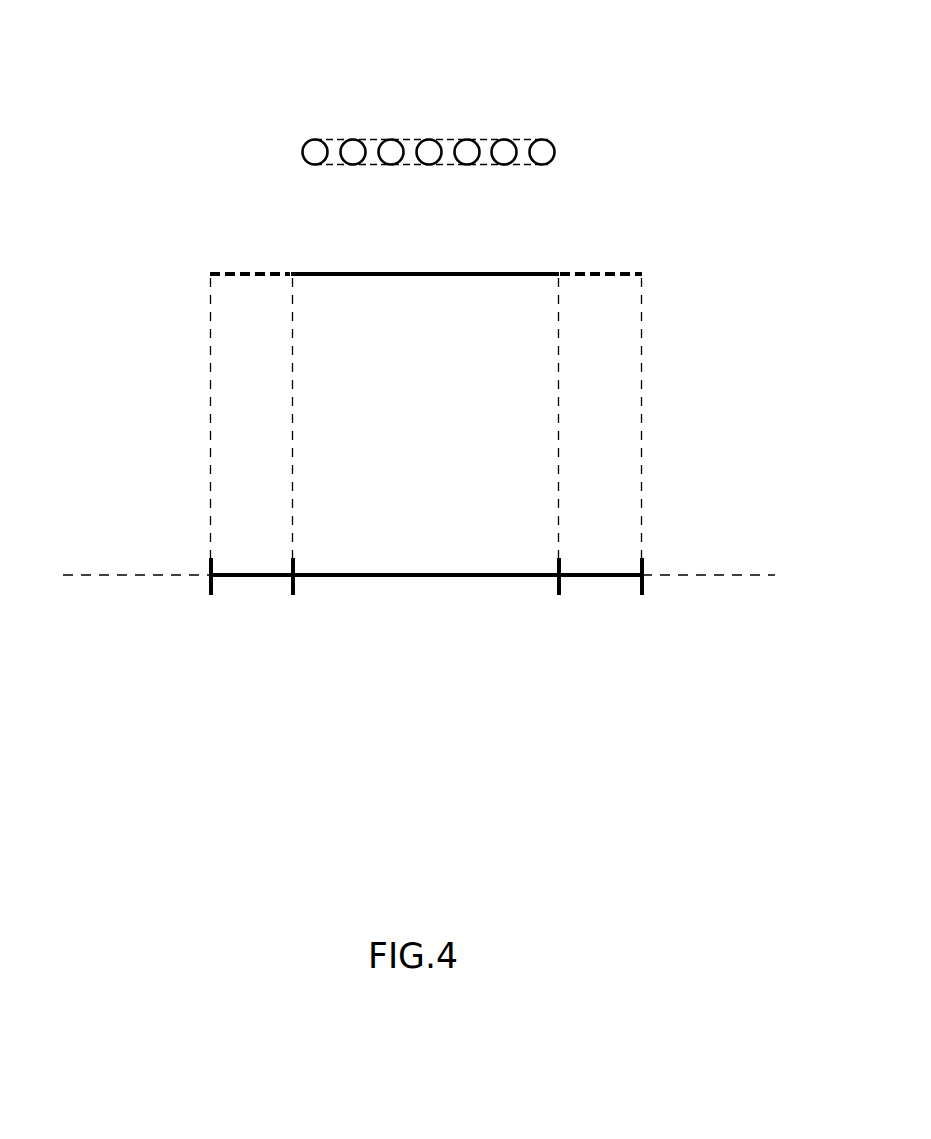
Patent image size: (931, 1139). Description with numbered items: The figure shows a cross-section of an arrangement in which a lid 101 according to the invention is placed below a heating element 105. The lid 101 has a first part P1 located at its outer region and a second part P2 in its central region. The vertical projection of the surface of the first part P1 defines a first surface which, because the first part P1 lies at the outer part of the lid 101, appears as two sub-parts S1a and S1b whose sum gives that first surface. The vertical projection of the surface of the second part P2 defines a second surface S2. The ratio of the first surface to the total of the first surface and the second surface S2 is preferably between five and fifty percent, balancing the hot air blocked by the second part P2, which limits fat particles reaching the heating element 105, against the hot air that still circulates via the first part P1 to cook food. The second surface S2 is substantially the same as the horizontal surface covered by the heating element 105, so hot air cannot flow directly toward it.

The lid 101 is at (381, 352).
The heating element 105 is at (550, 141).
The first part P1 is at (258, 274).
The second part P2 is at (408, 274).
The first sub-part of the first surface S1a is at (252, 592).
The second sub-part of the first surface S1b is at (602, 592).
The second surface S2 is at (435, 592).